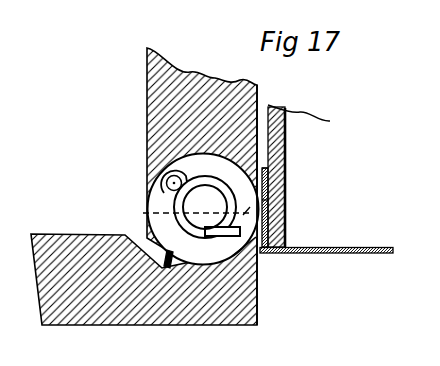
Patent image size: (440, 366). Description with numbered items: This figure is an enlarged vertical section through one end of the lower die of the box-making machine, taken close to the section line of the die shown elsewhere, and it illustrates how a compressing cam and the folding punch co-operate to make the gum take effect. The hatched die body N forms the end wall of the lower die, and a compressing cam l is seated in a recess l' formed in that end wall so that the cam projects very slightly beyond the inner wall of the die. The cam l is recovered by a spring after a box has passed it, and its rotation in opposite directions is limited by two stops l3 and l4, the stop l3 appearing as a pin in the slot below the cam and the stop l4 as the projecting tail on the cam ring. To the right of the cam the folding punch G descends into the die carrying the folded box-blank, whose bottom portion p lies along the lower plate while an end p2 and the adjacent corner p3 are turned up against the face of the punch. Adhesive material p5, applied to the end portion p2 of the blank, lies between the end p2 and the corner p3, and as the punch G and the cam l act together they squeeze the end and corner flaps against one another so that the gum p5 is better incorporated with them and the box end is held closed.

The frame N is at (147, 108).
The guide plate G is at (287, 131).
The bottom portion p is at (265, 207).
The end p2 is at (287, 189).
The corner p3 is at (287, 168).
The adhesive material p5 is at (287, 207).
The compressing cam l is at (198, 196).
The recess l' is at (188, 253).
The stop l3 is at (165, 257).
The stop l4 is at (211, 210).